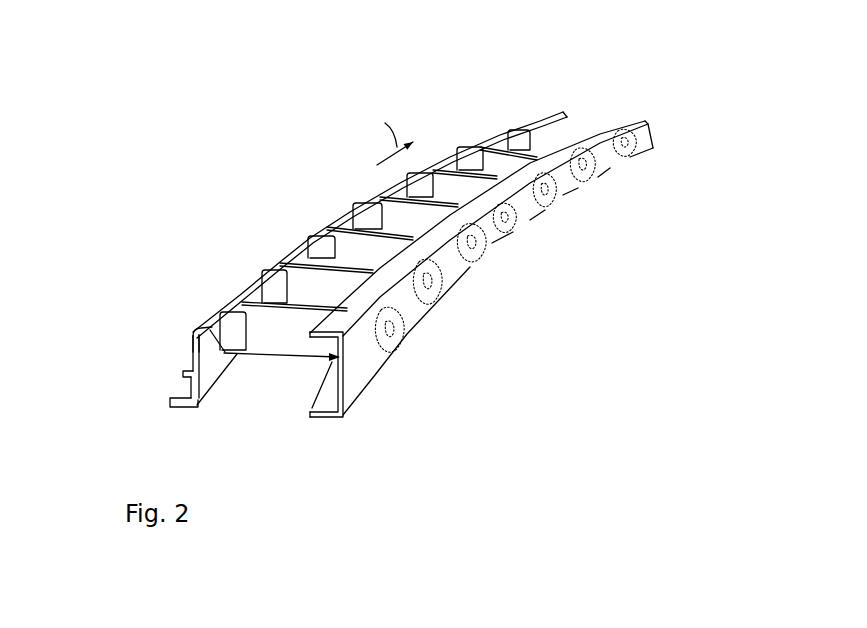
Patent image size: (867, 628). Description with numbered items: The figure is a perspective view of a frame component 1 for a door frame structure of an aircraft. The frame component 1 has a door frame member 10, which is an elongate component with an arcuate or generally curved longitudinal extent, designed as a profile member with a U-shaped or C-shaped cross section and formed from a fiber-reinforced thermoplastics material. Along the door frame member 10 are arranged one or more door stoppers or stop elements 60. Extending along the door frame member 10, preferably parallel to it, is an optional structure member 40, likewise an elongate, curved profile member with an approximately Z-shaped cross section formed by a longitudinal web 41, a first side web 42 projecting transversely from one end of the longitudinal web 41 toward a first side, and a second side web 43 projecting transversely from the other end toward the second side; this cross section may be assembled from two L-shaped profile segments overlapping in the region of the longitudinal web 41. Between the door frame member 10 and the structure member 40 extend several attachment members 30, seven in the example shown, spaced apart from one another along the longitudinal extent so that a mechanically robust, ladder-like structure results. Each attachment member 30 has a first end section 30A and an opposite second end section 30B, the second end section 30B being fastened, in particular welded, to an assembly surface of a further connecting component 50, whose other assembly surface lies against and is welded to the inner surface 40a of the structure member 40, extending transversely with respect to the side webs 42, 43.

The frame component 1 is at (494, 80).
The door frame member 10 is at (353, 380).
The attachment member 30 is at (350, 243).
The first end section of the attachment member 30A is at (307, 347).
The second end section of the attachment member 30B is at (243, 302).
The structure member 40 is at (140, 369).
The inner surface of the structure member 40a is at (193, 403).
The longitudinal web 41 is at (183, 377).
The first side web 42 is at (190, 400).
The second side web 43 is at (203, 320).
The further connecting component 50 is at (282, 284).
The stop element 60 is at (400, 343).